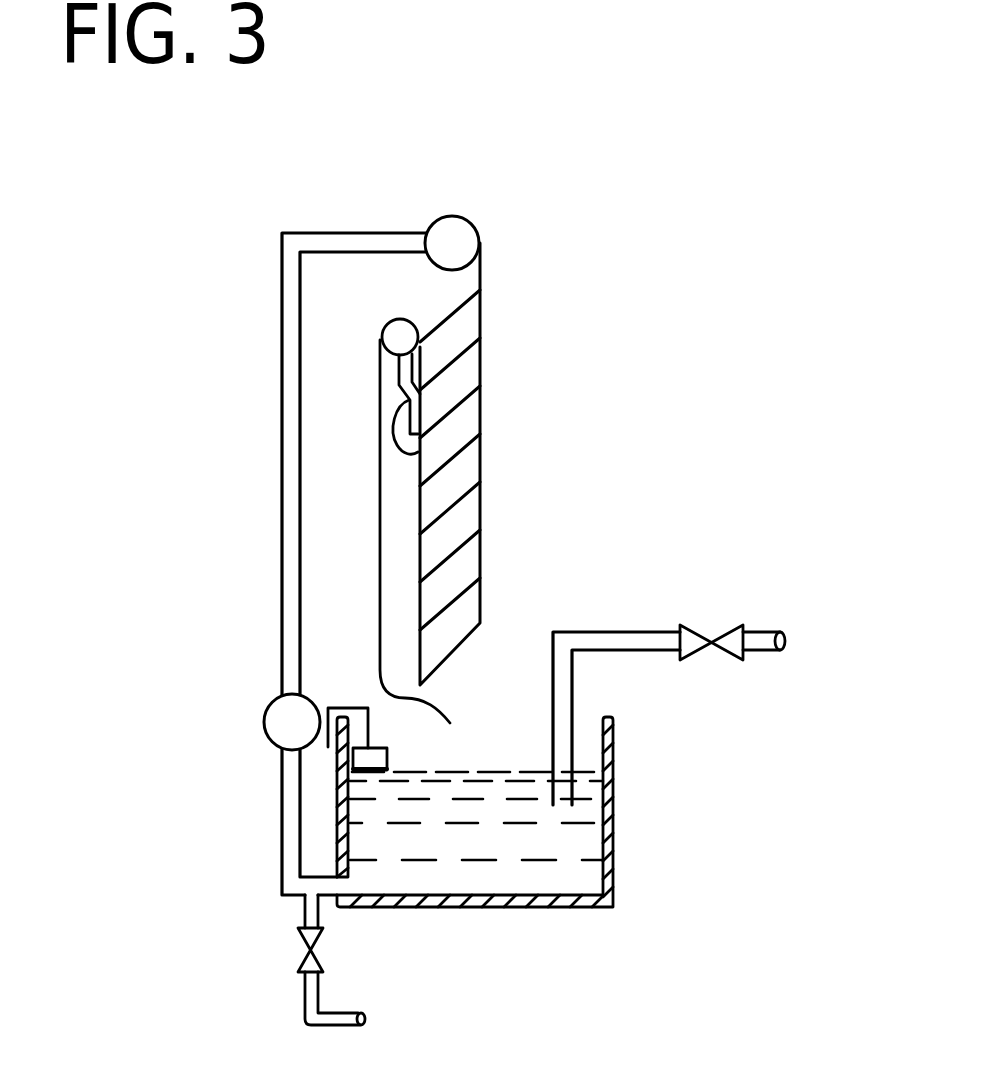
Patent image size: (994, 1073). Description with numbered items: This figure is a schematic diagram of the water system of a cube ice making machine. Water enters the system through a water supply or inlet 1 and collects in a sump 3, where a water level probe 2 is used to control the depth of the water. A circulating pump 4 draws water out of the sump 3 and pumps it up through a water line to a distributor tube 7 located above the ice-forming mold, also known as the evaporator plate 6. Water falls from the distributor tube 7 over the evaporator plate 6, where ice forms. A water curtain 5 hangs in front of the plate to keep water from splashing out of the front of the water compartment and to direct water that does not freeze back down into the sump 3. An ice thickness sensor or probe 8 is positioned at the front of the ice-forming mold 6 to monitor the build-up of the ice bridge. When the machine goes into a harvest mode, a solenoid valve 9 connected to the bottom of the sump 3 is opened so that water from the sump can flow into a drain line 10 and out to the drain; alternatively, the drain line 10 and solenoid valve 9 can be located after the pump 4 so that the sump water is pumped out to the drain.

The water supply 1 is at (724, 687).
The water level probe 2 is at (352, 708).
The sump 3 is at (613, 797).
The circulating pump 4 is at (264, 722).
The water curtain 5 is at (375, 505).
The evaporator plate 6 is at (440, 328).
The distributor tube 7 is at (453, 215).
The ice thickness probe 8 is at (418, 452).
The solenoid valve 9 is at (303, 940).
The drain line 10 is at (305, 1015).